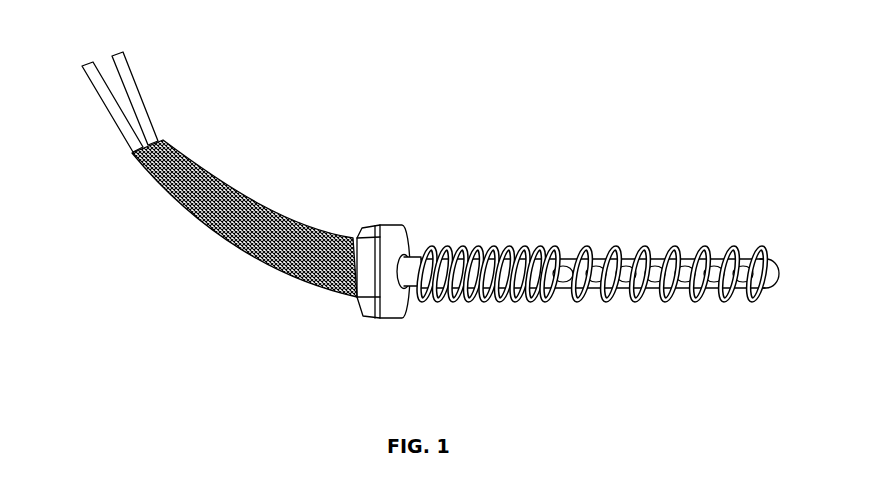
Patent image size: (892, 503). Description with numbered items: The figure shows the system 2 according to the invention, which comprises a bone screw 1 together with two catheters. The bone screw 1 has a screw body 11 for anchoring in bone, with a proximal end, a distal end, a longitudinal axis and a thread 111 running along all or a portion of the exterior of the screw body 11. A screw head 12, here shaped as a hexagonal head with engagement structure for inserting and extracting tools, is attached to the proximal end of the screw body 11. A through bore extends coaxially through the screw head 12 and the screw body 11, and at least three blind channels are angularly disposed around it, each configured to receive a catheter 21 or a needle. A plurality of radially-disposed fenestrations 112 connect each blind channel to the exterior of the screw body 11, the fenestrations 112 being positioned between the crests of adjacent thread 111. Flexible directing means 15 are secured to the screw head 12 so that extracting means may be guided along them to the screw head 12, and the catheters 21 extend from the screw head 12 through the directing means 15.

The bone screw 1 is at (568, 258).
The system 2 is at (277, 162).
The screw body 11 is at (497, 301).
The screw head 12 is at (395, 318).
The flexible directing means 15 is at (237, 249).
The catheter 21 is at (118, 54).
The thread 111 is at (508, 250).
The fenestrations 112 is at (732, 258).